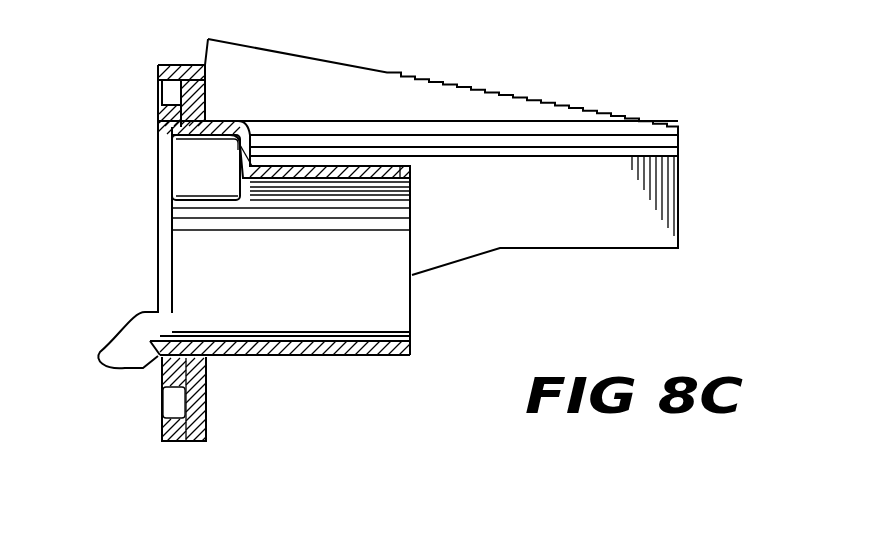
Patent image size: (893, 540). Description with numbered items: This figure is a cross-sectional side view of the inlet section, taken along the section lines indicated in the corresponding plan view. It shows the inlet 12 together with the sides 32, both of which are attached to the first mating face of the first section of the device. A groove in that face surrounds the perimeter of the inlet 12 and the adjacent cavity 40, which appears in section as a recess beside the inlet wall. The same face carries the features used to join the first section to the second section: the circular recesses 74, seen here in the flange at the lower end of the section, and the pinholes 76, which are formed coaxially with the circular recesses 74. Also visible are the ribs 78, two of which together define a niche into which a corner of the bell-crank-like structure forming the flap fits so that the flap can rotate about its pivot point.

The inlet 12 is at (410, 343).
The sides 32 is at (567, 238).
The cavity 40 is at (203, 162).
The circular recesses 74 is at (172, 402).
The pinholes 76 is at (207, 407).
The ribs 78 is at (147, 365).